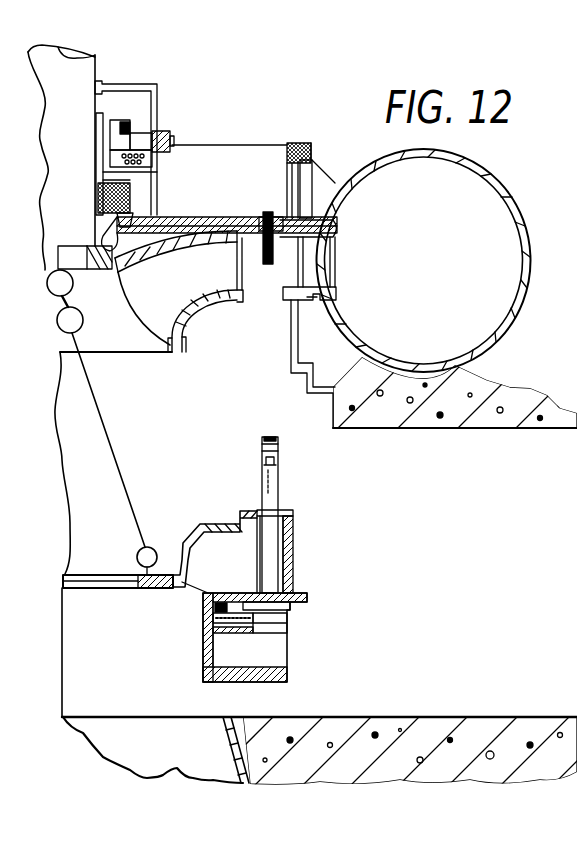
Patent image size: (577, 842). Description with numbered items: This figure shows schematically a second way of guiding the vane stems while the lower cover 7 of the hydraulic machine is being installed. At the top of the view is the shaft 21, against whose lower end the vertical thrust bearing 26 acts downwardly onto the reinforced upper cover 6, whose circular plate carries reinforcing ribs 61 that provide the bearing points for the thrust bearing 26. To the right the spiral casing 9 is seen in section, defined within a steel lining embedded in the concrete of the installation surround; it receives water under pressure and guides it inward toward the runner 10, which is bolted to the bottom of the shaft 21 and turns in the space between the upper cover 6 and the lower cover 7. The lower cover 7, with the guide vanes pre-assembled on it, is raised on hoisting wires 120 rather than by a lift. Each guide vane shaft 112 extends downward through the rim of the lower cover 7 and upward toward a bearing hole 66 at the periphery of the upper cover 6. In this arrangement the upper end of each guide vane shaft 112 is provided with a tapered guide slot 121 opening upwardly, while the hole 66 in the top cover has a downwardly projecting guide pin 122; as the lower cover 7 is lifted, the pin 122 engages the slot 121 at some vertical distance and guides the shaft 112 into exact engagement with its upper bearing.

The shaft 21 is at (96, 58).
The vertical thrust bearing 26 is at (182, 133).
The reinforcing ribs 61 is at (280, 150).
The upper cover 6 is at (194, 216).
The bearing hole 66 is at (266, 214).
The spiral casing 9 is at (518, 203).
The runner 10 is at (196, 318).
The guide pins 122 is at (276, 255).
The hoisting wires 120 is at (95, 391).
The lower cover 7 is at (205, 528).
The guide vane shaft 112 is at (277, 552).
The tapered guide slots 121 is at (262, 437).